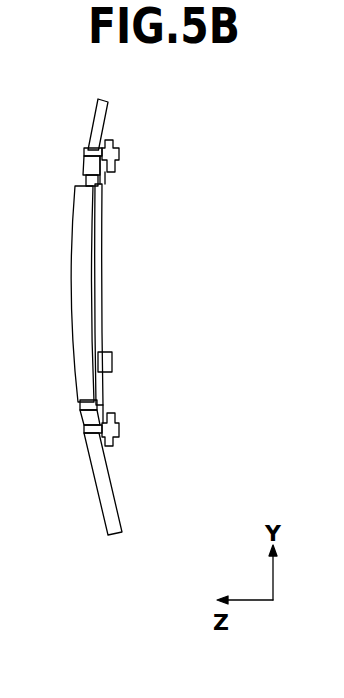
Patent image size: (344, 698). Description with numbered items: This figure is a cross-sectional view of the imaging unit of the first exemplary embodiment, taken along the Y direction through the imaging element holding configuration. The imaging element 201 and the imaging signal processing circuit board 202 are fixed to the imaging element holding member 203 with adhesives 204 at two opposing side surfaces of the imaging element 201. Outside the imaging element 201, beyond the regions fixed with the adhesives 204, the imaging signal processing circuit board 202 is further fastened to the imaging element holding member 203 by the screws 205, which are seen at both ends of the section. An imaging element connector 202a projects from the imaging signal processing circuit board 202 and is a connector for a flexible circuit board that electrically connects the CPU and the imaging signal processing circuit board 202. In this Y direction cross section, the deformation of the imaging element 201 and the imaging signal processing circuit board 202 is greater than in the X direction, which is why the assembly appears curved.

The imaging element 201 is at (82, 288).
The imaging signal processing circuit board 202 is at (100, 243).
The imaging element connector 202a is at (112, 362).
The imaging element holding member 203 is at (110, 122).
The adhesive 204 is at (100, 185).
The screw 205 is at (119, 153).